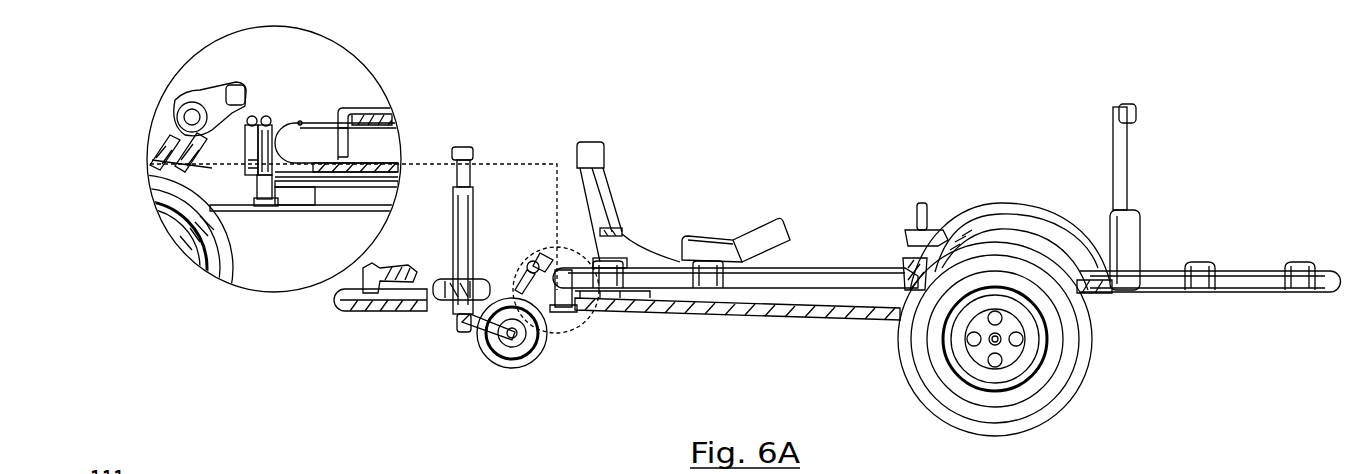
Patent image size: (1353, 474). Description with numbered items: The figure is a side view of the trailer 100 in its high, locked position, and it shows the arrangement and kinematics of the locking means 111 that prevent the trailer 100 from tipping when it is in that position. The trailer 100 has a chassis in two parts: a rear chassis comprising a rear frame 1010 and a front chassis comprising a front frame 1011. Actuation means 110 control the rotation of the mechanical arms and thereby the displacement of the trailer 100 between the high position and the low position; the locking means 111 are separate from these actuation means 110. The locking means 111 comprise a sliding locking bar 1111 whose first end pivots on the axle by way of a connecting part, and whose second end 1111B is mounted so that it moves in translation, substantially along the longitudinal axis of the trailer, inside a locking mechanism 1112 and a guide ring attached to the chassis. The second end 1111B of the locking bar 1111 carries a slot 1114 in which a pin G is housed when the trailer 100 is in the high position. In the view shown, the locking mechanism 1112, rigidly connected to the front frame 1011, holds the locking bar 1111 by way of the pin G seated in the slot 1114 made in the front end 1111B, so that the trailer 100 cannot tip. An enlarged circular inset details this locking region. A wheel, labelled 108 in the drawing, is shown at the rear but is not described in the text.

The trailer 100 is at (1230, 127).
The rear wheel 108 is at (1068, 368).
The actuation means 110 is at (503, 270).
The locking means 111 is at (264, 283).
The rear frame 1010 is at (1257, 284).
The front frame 1011 is at (820, 270).
The locking bar 1111 is at (790, 318).
The second end of the locking bar 1111B is at (350, 165).
The locking mechanism 1112 is at (247, 147).
The slot 1114 is at (262, 208).
The pin G is at (300, 121).